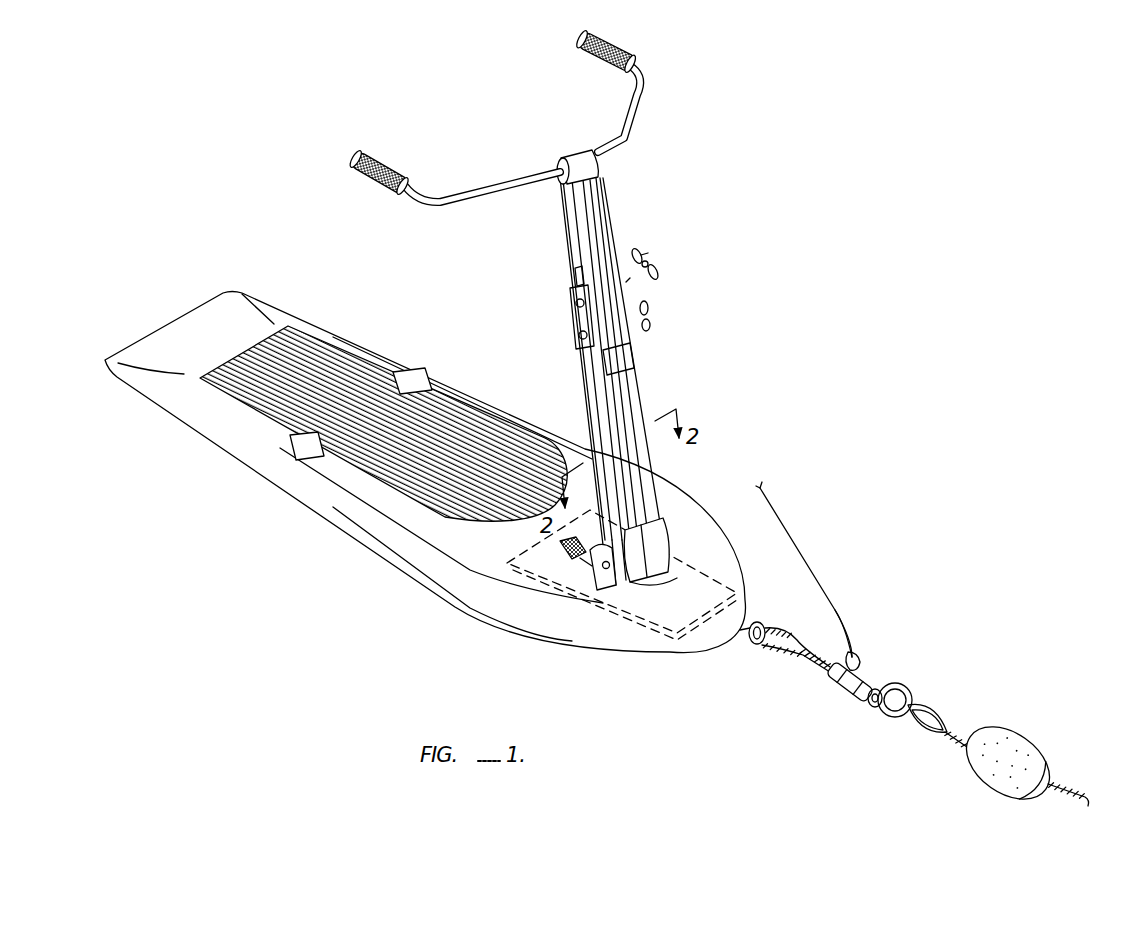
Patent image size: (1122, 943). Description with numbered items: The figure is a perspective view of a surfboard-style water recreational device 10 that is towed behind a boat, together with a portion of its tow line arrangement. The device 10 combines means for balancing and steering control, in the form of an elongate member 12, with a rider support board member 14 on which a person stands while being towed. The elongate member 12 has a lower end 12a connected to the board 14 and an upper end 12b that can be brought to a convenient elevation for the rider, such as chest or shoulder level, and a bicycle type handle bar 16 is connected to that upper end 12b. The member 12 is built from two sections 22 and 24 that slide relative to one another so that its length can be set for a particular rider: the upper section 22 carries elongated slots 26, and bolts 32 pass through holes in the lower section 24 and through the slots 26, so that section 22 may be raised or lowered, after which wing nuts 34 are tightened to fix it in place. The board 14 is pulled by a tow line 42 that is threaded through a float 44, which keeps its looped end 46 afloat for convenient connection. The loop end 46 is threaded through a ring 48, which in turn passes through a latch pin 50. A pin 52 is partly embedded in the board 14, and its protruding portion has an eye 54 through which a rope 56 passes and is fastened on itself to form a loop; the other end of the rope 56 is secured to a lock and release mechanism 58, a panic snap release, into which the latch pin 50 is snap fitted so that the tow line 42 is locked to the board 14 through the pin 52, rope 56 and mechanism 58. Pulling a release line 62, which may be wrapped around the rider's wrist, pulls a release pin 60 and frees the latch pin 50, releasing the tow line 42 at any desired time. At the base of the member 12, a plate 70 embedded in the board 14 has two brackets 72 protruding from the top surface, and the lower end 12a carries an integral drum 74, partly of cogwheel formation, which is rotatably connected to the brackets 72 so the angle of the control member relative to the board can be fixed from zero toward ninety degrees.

The water recreational device 10 is at (962, 150).
The elongate member 12 is at (615, 367).
The lower end 12a is at (667, 532).
The upper end 12b is at (597, 187).
The rider support board member 14 is at (326, 511).
The handle bar 16 is at (642, 80).
The section 22 is at (575, 235).
The section 24 is at (585, 397).
The elongated slots 26 is at (578, 279).
The bolts 32 is at (577, 336).
The wing nuts 34 is at (650, 316).
The tow line 42 is at (1070, 784).
The float 44 is at (1036, 741).
The end 46 is at (928, 714).
The ring 48 is at (910, 692).
The latch pin 50 is at (872, 702).
The pin 52 is at (733, 629).
The eye 54 is at (748, 642).
The rope 56 is at (783, 614).
The lock and release mechanism 58 is at (843, 684).
The release pin 60 is at (860, 657).
The release line 62 is at (798, 545).
The plate 70 is at (690, 546).
The brackets 72 is at (610, 572).
The drum 74 is at (637, 568).